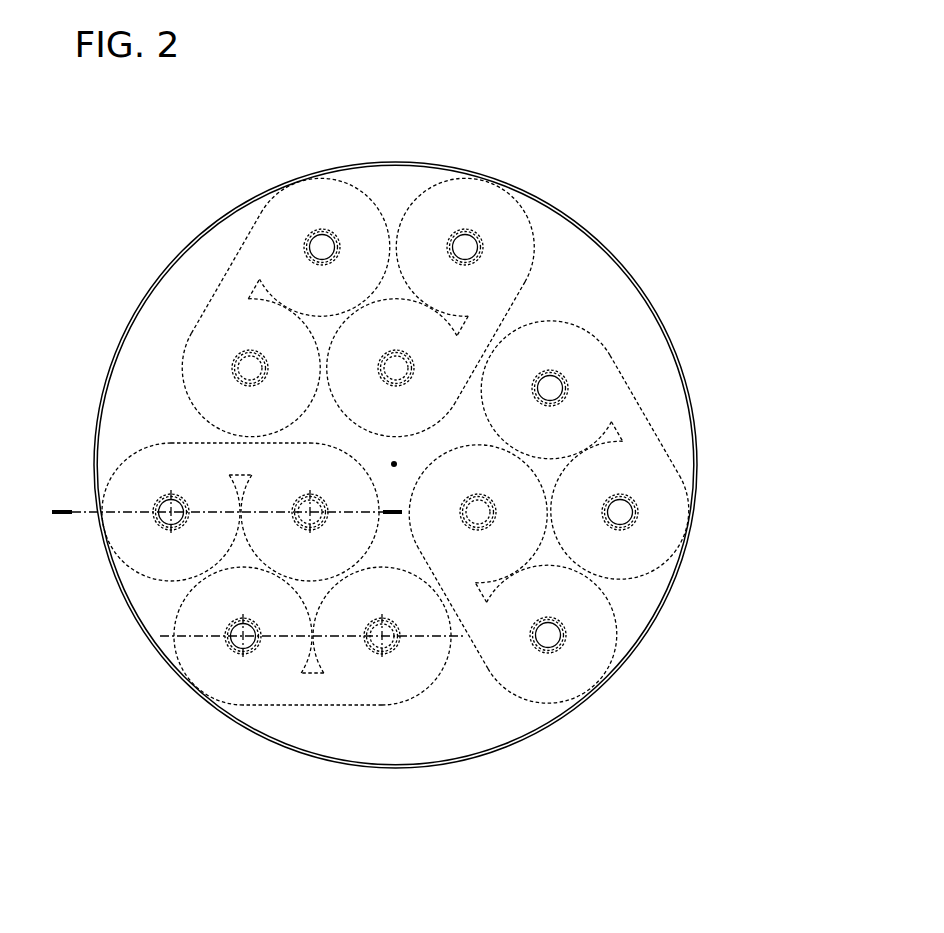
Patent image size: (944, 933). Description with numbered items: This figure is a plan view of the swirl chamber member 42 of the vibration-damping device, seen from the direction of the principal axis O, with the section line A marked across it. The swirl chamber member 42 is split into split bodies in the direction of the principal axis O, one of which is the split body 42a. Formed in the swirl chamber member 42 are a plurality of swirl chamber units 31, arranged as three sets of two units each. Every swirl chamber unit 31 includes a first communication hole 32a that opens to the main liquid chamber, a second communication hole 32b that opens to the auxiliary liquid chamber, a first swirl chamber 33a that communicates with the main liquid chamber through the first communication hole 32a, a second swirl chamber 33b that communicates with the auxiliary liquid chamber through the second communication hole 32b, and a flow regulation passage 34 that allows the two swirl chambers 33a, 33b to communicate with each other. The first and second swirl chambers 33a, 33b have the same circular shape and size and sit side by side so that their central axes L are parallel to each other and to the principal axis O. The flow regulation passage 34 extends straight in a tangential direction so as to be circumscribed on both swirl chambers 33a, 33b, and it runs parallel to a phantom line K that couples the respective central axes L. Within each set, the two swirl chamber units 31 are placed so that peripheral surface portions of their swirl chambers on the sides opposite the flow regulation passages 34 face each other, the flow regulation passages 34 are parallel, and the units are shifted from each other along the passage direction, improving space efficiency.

The swirl chamber unit 31 is at (394, 465).
The first communication hole 32a is at (605, 500).
The second communication hole 32b is at (556, 388).
The first swirl chamber 33a is at (627, 470).
The second swirl chamber 33b is at (553, 349).
The flow regulation passage 34 is at (625, 381).
The swirl chamber member 42 is at (560, 203).
The split body 42a is at (157, 274).
The principal axis O is at (394, 464).
The central axis L is at (310, 512).
The phantom line K is at (121, 515).
The section line A- A is at (62, 517).